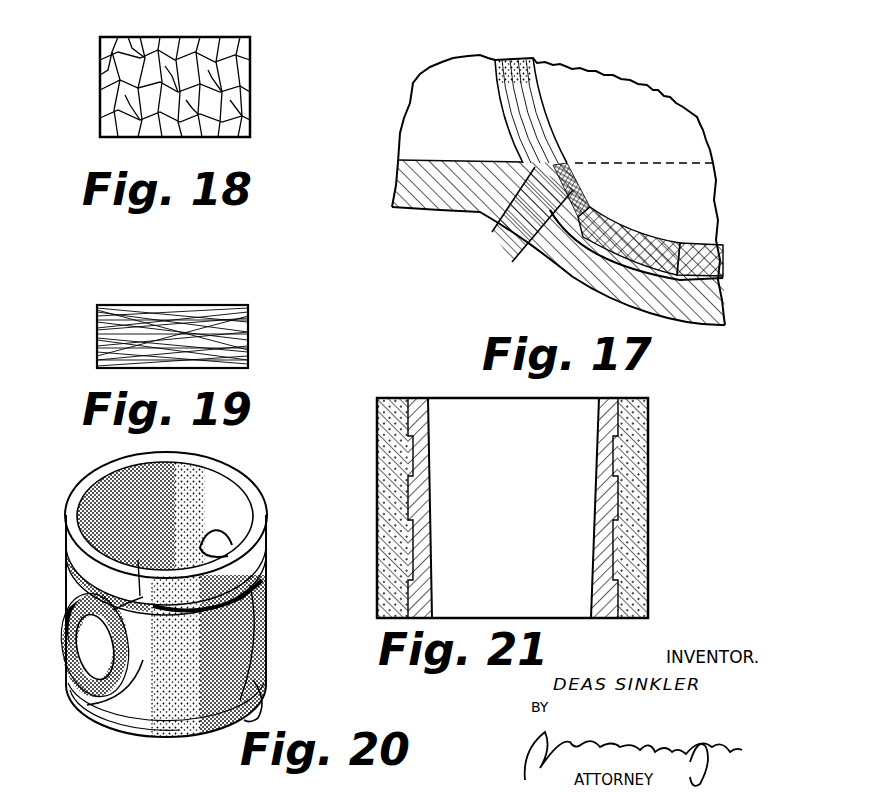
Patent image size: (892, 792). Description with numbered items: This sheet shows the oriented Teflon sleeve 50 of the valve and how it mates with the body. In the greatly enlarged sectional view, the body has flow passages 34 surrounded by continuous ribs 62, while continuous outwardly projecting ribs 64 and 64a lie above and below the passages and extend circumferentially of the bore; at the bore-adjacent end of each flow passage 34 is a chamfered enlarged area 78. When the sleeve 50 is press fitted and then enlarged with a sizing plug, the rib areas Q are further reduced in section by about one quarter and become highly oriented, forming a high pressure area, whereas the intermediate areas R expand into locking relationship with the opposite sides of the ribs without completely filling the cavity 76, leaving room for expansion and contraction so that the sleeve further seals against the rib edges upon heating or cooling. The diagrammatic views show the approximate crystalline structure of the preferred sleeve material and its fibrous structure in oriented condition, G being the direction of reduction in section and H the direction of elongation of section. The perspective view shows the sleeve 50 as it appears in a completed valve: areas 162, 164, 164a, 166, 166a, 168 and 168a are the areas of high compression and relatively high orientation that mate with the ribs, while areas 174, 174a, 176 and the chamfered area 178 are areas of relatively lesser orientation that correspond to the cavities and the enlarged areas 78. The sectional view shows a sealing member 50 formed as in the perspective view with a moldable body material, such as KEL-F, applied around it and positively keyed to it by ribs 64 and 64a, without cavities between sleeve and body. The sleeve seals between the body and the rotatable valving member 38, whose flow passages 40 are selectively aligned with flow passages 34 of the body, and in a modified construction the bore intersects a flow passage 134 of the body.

In FIG. 17, the flow passages 34 is at (421, 110).
In FIG. 20, the flow passages 34 is at (100, 653).
In FIG. 17, the rotatable valving member 38 is at (692, 126).
In FIG. 17, the flow passages of the valving member 40 is at (637, 158).
In FIG. 17, the sleeve 50 is at (723, 253).
In FIG. 21, the sleeve 50 is at (418, 398).
In FIG. 20, the sleeve 50 is at (64, 490).
In FIG. 17, the continuous ribs 62 is at (550, 210).
In FIG. 21, the continuous outwardly projecting rib 64 is at (414, 438).
In FIG. 21, the continuous outwardly projecting rib 64a is at (406, 576).
In FIG. 17, the cavity 76 is at (682, 262).
In FIG. 17, the enlarged areas 78 is at (496, 236).
In FIG. 20, the flow passage 134 is at (226, 545).
In FIG. 20, the area of high compression 162 is at (130, 700).
In FIG. 20, the area of high compression 164 is at (250, 584).
In FIG. 20, the area of high compression 164a is at (166, 740).
In FIG. 20, the area of high compression 166 is at (76, 602).
In FIG. 20, the area of high compression 166a is at (132, 708).
In FIG. 20, the area of high compression 168 is at (145, 598).
In FIG. 20, the area of high compression 168a is at (240, 722).
In FIG. 20, the area of lesser orientation 174 is at (78, 562).
In FIG. 20, the area of lesser orientation 174a is at (130, 738).
In FIG. 20, the area of lesser orientation 176 is at (252, 640).
In FIG. 20, the chamfered area 178 is at (105, 712).
In FIG. 19, the direction of reduction in section G is at (270, 305).
In FIG. 19, the direction of elongation of section H is at (248, 272).
In FIG. 17, the rib areas Q is at (576, 186).
In FIG. 17, the intermediate areas R is at (642, 232).